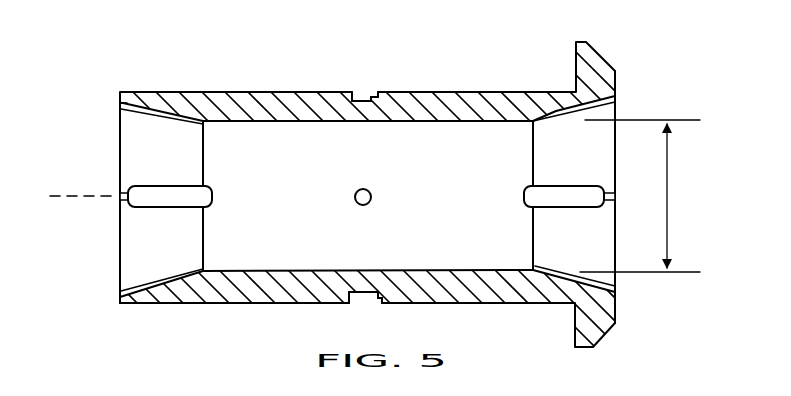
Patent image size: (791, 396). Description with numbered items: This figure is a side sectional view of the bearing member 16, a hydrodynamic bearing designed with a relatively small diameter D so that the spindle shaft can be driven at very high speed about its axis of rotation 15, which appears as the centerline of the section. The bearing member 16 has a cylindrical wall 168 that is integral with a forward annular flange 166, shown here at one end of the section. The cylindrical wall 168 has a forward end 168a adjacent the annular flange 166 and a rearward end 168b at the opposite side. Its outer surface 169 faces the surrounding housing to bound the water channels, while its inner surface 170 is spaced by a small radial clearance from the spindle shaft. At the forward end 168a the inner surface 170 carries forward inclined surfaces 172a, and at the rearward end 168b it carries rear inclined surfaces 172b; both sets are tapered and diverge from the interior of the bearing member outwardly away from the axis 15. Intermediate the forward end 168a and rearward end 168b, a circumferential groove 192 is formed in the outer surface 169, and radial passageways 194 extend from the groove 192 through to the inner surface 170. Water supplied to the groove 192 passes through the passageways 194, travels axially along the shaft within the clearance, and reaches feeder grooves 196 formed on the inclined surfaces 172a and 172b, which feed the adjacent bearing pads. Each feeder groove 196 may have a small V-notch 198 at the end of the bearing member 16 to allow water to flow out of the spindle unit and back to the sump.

The axis of rotation 15 is at (76, 192).
The bearing member 16 is at (395, 184).
The forward annular flange 166 is at (601, 76).
The cylindrical wall 168 is at (395, 184).
The forward end of the cylindrical wall 168a is at (574, 90).
The rearward end of the cylindrical wall 168b is at (160, 92).
The outer surface 169 is at (367, 81).
The inner surface 170 is at (311, 126).
The forward inclined surfaces 172a is at (595, 168).
The rear inclined surfaces 172b is at (182, 168).
The circumferential groove 192 is at (356, 97).
The radial passageways 194 is at (375, 99).
The feeder grooves 196 is at (600, 110).
The V-notch 198 is at (617, 292).
The diameter D is at (672, 193).